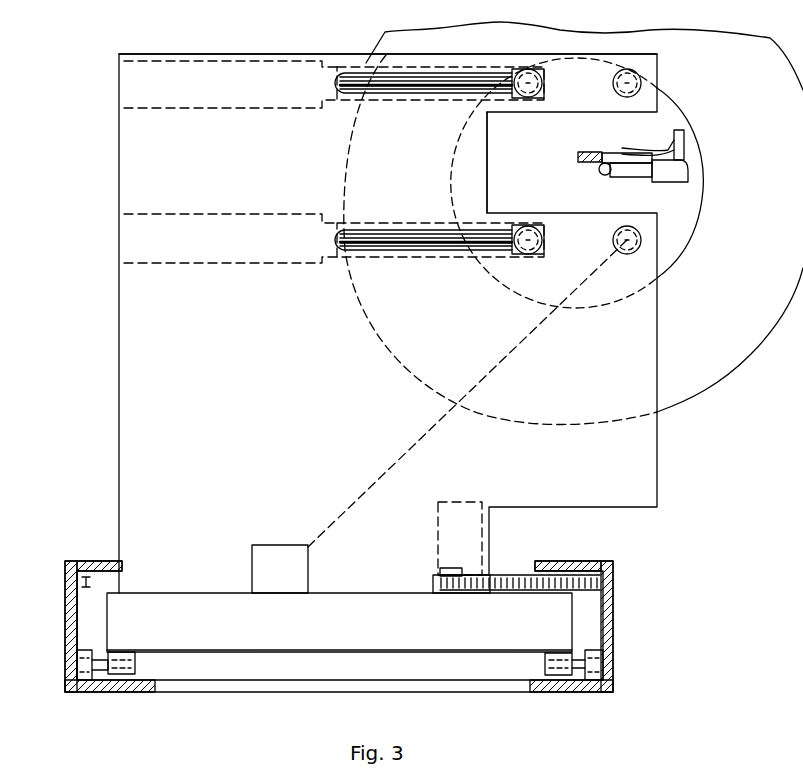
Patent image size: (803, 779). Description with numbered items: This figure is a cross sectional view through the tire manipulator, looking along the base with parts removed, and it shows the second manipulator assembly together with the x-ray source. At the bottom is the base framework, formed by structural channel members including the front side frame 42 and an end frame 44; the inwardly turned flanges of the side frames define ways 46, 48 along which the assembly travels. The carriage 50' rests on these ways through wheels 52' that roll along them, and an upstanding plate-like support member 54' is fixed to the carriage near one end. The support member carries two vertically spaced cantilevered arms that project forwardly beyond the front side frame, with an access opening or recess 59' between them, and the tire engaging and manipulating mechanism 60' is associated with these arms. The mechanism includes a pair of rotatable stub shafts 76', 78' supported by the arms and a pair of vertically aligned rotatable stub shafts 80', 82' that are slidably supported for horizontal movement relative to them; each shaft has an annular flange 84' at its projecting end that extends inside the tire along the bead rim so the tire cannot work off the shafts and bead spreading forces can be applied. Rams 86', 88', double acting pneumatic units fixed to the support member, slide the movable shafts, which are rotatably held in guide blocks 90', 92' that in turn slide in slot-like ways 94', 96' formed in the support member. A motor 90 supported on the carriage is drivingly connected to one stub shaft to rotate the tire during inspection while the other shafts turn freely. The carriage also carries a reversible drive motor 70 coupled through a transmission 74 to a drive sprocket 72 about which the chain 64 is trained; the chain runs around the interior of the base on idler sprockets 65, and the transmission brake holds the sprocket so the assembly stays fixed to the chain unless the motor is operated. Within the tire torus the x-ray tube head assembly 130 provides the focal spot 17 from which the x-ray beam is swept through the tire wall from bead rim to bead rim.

The focal spot 17 is at (683, 142).
The front side frame 42 is at (75, 606).
The end frame 44 is at (613, 640).
The way 46 is at (148, 674).
The way 48 is at (542, 680).
The carriage 50' is at (339, 622).
The wheel 52' is at (383, 694).
The support member 54' is at (388, 323).
The recess 59' is at (466, 162).
The tire engaging and manipulating mechanism 60' is at (388, 83).
The chain 64 is at (85, 574).
The idler sprocket 65 is at (565, 578).
The reversible drive motor 70 is at (438, 523).
The drive sprocket 72 is at (442, 560).
The transmission 74 is at (430, 582).
The stub shaft 76' is at (663, 83).
The stub shaft 78' is at (672, 240).
The stub shaft 80' is at (555, 83).
The stub shaft 82' is at (467, 393).
The annular flange 84' is at (563, 174).
The ram 86' is at (230, 107).
The ram 88' is at (230, 259).
The motor 90 is at (256, 565).
The guide block 90' is at (518, 62).
The guide block 92' is at (513, 269).
The way 94' is at (439, 104).
The way 96' is at (439, 266).
The x-ray tube head assembly 130 is at (690, 180).